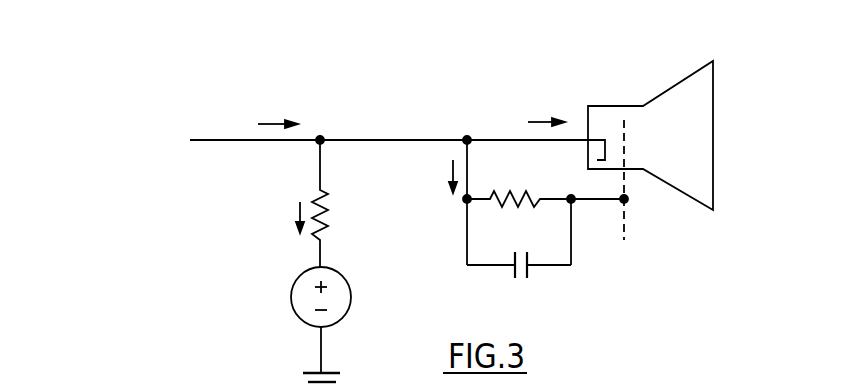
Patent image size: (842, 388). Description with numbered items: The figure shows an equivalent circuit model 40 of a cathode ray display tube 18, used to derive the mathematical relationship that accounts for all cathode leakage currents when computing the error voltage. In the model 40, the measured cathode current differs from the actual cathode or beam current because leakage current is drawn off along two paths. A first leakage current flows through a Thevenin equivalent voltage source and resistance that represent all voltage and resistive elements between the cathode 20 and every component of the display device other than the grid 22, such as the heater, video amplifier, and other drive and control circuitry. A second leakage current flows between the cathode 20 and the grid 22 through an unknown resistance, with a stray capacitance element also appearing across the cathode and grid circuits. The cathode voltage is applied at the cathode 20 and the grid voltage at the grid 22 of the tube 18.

The tube 18 is at (715, 102).
The cathode 20 is at (606, 153).
The grid 22 is at (627, 186).
The equivalent circuit model 40 is at (563, 73).